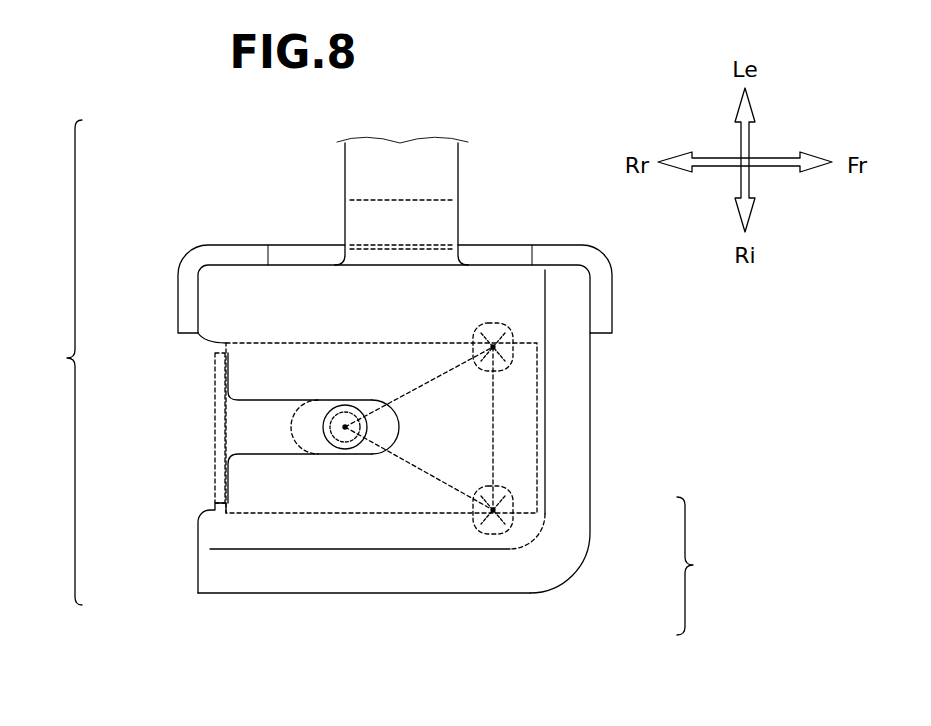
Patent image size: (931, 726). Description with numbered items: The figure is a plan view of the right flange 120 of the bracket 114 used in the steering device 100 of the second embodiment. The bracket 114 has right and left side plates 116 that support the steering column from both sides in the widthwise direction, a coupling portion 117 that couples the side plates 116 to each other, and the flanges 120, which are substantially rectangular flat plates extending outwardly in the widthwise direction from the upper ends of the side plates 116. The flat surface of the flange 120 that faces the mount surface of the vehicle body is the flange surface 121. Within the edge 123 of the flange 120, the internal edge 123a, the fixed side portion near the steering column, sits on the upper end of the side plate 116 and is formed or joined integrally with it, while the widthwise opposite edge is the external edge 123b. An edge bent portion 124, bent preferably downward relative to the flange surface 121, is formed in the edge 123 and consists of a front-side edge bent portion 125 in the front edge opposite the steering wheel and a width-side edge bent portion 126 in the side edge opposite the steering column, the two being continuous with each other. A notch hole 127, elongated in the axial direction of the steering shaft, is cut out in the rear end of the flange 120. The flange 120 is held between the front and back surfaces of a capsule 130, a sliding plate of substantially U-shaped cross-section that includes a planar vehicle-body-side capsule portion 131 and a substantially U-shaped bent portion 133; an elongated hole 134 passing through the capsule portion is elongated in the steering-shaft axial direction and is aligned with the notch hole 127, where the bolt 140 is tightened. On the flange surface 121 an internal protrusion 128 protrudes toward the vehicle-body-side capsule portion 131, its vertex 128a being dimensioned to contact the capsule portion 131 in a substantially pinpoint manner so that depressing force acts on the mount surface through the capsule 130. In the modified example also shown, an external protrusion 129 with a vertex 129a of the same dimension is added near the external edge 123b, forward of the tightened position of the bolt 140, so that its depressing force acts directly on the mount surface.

The steering device 100 is at (532, 153).
The bracket 114 is at (49, 362).
The side plate 116 is at (178, 292).
The coupling portion 117 is at (377, 175).
The flange 120 is at (196, 571).
The flange surface 121 is at (270, 491).
The edge 123 is at (333, 551).
The internal edge 123a is at (298, 263).
The external edge 123b is at (392, 550).
The edge bent portion 124 is at (644, 484).
The front-side edge bent portion 125 is at (568, 494).
The width-side edge bent portion 126 is at (465, 572).
The notch hole 127 is at (262, 448).
The internal protrusion 128 is at (520, 334).
The vertex of internal protrusion 128a is at (493, 328).
The external protrusion 129 is at (521, 497).
The vertex of external protrusion 129a is at (491, 488).
The capsule 130 is at (247, 341).
The vehicle-body-side capsule portion 131 is at (291, 341).
The bent portion 133 is at (213, 421).
The elongated hole 134 is at (316, 400).
The bolt 140 is at (345, 441).